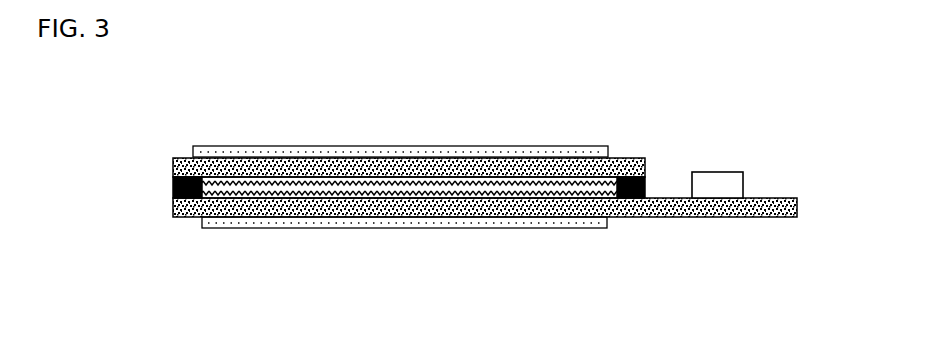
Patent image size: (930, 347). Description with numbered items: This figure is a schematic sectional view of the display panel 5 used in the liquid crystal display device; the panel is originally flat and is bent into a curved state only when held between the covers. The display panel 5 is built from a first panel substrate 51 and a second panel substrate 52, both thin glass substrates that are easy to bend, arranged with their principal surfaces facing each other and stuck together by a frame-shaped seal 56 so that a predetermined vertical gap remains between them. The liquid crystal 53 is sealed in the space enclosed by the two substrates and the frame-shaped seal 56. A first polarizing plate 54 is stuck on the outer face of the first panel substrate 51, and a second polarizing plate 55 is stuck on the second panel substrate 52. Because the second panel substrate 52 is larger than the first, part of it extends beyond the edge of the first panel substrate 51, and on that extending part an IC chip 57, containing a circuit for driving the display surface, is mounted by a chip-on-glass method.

The display panel 5 is at (647, 108).
The first panel substrate 51 is at (177, 157).
The second panel substrate 52 is at (182, 218).
The liquid crystal 53 is at (266, 185).
The first polarizing plate 54 is at (442, 147).
The second polarizing plate 55 is at (458, 218).
The frame-shaped seal 56 is at (173, 186).
The IC chip 57 is at (715, 172).